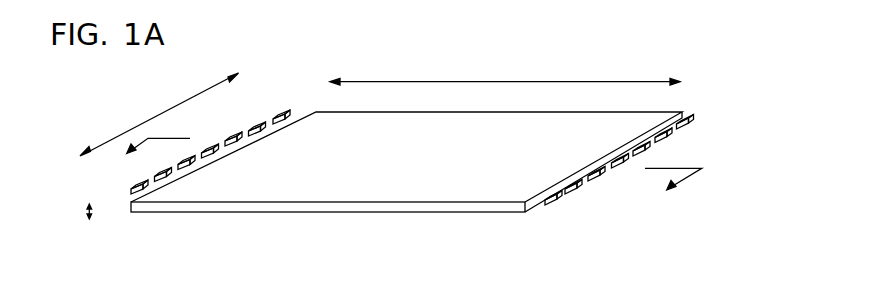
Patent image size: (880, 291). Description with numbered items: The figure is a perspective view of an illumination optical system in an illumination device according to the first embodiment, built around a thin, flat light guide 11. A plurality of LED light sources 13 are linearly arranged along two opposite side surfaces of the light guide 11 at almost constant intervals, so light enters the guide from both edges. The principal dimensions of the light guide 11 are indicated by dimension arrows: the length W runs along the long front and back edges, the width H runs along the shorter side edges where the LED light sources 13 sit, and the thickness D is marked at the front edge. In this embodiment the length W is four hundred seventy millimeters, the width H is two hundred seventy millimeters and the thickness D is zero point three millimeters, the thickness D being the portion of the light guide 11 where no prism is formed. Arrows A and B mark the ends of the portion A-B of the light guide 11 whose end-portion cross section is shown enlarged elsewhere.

The light guide 11 is at (398, 182).
The LED light sources 13 is at (593, 178).
The width H is at (159, 114).
The length W is at (505, 65).
The thickness D is at (76, 214).
The portion A-B end point A is at (148, 160).
The portion A-B end point B is at (673, 190).